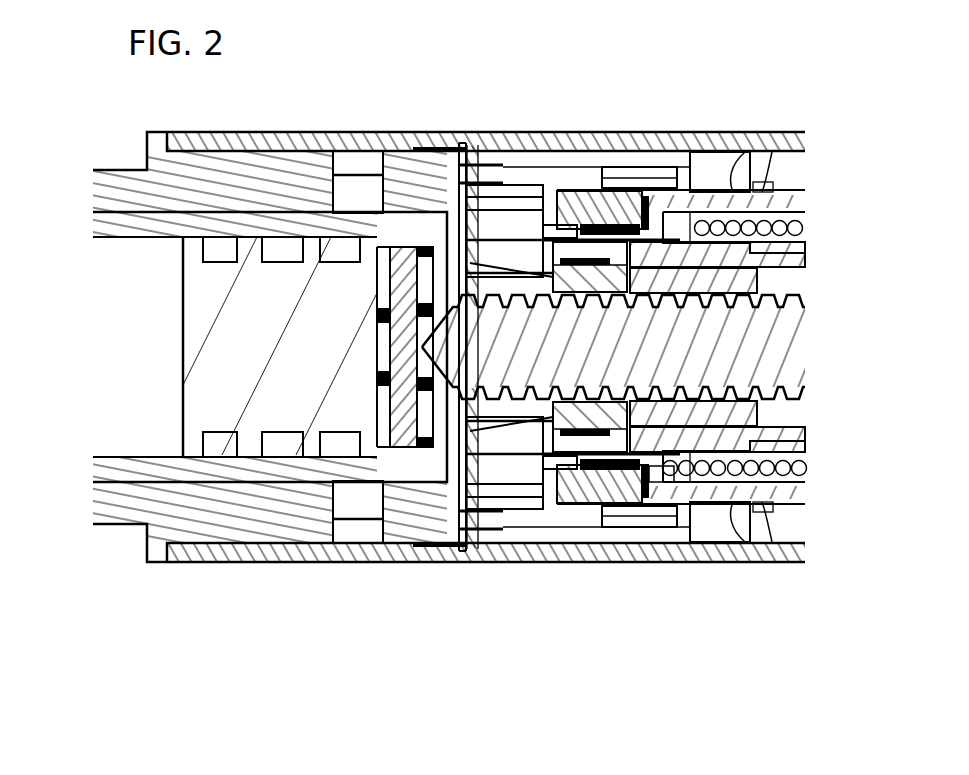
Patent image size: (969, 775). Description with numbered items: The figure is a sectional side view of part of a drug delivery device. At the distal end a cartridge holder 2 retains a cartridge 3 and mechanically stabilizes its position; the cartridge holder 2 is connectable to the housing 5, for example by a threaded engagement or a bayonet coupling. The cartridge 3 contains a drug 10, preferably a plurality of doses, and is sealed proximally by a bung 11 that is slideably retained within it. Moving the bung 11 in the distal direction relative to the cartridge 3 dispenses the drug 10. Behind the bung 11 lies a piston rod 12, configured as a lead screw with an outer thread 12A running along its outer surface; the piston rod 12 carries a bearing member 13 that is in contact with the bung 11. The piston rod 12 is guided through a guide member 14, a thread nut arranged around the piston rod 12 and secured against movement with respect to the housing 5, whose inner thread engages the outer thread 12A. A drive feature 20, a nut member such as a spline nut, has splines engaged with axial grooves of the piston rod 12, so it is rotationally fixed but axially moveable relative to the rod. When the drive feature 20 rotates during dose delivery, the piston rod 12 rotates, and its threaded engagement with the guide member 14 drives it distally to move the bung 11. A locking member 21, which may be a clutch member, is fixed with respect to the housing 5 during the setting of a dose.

The cartridge holder 2 is at (122, 199).
The cartridge 3 is at (115, 233).
The housing 5 is at (568, 548).
The drug 10 is at (146, 345).
The bung 11 is at (225, 387).
The piston rod 12 is at (795, 379).
The outer thread 12A is at (773, 296).
The bearing member 13 is at (403, 420).
The guide member 14 is at (466, 548).
The drive feature 20 is at (707, 410).
The locking member 21 is at (656, 478).